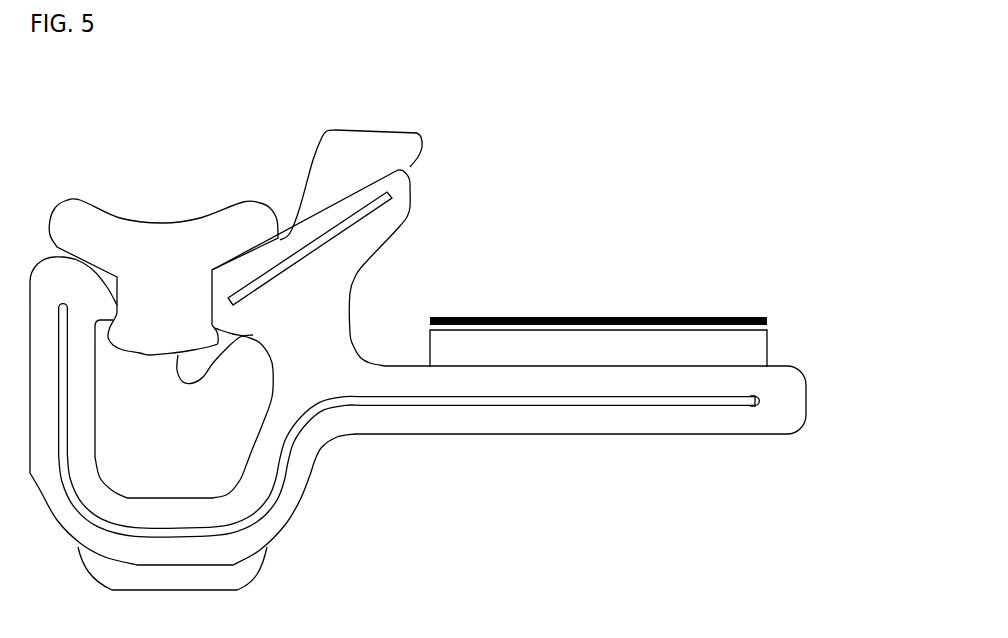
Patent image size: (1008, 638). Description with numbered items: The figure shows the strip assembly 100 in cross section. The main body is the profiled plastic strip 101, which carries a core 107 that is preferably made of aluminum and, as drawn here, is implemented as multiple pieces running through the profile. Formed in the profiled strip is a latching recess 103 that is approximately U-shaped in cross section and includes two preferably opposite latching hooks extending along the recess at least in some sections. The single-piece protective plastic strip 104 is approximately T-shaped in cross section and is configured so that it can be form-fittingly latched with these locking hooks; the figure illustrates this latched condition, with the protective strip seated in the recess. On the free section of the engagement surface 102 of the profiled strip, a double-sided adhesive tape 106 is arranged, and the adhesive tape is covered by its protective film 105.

The strip assembly 100 is at (465, 303).
The profiled plastic strip 101 is at (320, 302).
The free section of engagement surface 102 is at (783, 360).
The latching recess 103 is at (175, 415).
The protective plastic strip 104 is at (170, 265).
The protective film 105 is at (636, 312).
The double-sided adhesive tape 106 is at (697, 347).
The core 107 is at (392, 193).